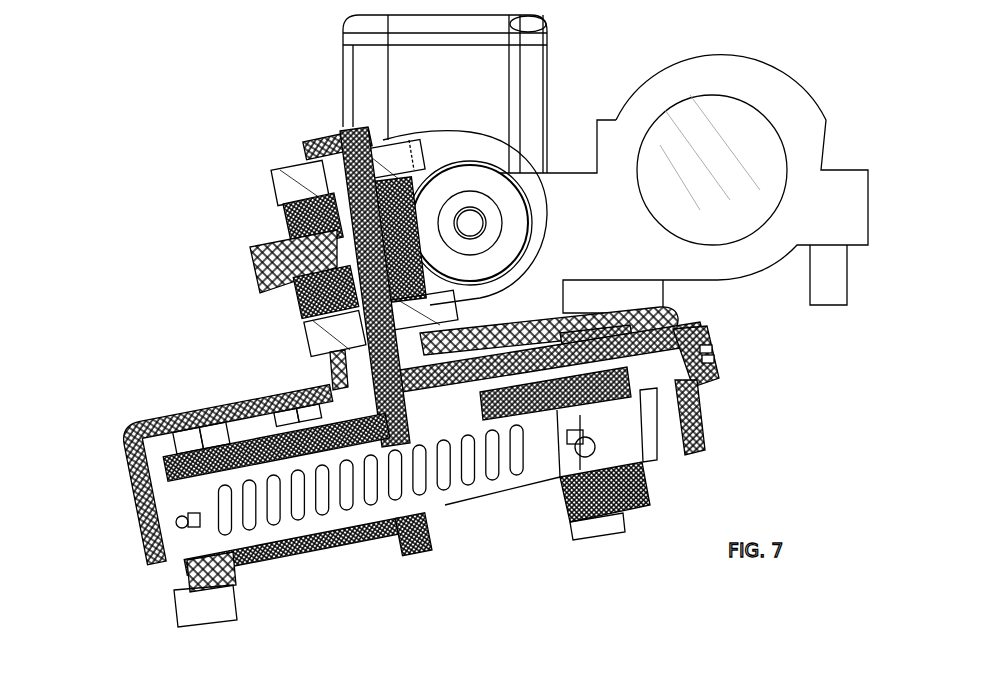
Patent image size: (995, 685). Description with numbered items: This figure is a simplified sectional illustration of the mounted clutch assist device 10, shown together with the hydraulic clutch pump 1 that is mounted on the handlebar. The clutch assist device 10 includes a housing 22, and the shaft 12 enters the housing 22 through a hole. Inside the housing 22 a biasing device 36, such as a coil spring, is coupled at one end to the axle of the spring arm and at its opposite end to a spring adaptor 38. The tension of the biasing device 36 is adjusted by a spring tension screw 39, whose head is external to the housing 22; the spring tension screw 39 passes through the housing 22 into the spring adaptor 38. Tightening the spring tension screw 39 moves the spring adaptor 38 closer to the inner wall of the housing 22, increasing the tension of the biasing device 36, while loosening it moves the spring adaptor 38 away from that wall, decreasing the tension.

The pump 1 is at (540, 68).
The clutch assist device 10 is at (125, 348).
The shaft 12 is at (332, 147).
The housing 22 is at (137, 502).
The biasing device 36 is at (318, 500).
The spring adaptor 38 is at (635, 487).
The spring tension screw 39 is at (705, 375).